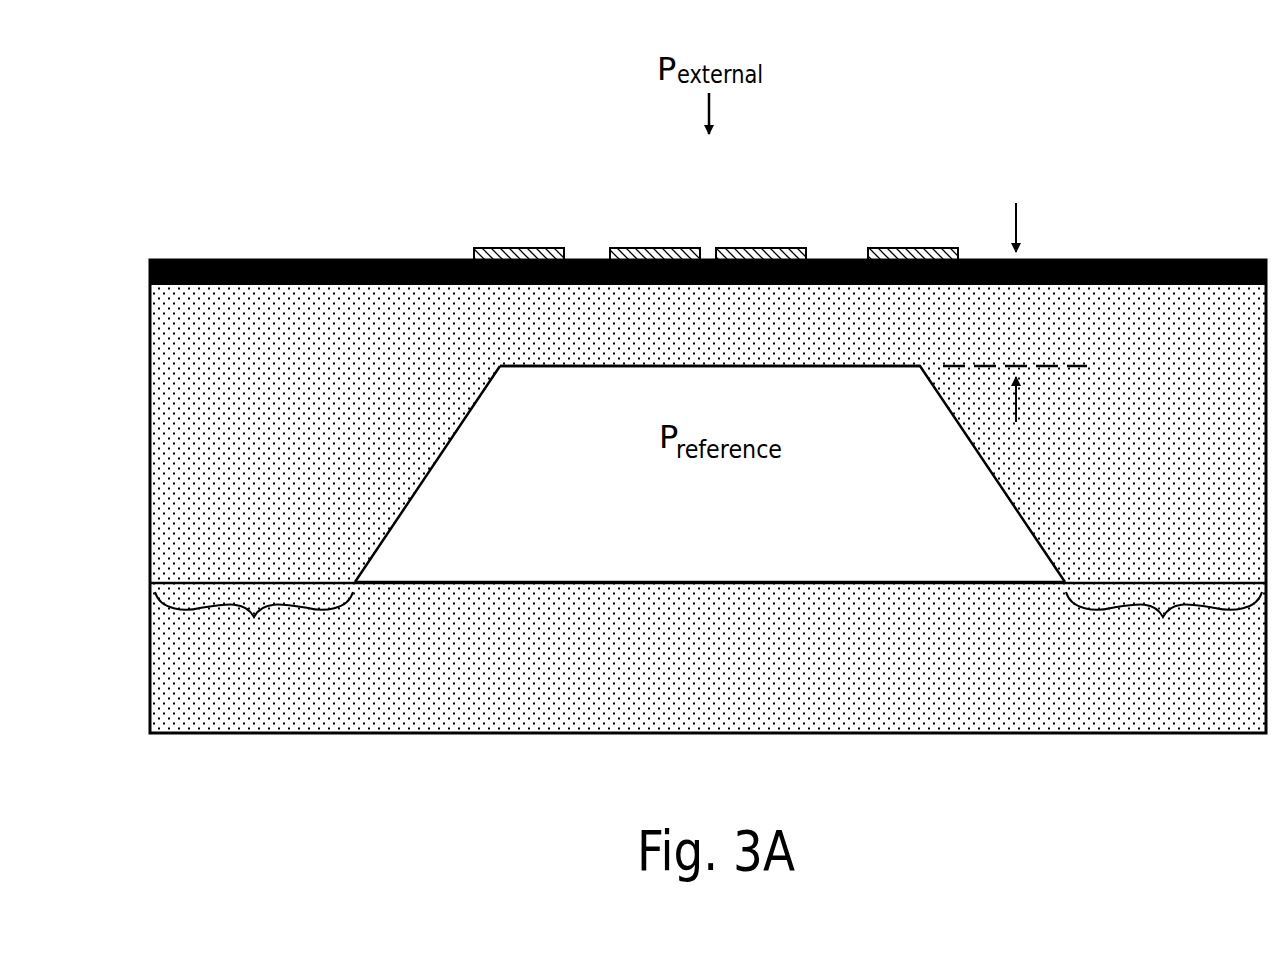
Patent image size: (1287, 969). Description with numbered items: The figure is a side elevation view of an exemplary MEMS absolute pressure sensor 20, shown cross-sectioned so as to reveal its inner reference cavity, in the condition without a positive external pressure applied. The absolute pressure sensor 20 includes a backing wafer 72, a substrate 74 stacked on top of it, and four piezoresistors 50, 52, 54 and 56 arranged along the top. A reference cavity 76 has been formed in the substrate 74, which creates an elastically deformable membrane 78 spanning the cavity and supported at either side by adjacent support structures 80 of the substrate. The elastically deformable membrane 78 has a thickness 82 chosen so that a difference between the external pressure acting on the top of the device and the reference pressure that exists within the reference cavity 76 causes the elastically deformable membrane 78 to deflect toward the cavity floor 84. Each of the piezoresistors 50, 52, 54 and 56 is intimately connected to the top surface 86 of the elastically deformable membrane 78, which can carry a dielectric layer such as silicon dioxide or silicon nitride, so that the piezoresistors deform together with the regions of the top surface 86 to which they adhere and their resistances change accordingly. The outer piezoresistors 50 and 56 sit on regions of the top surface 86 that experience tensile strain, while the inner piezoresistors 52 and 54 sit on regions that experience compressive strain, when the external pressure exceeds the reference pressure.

The absolute pressure sensor 20 is at (1170, 136).
The piezoresistor 50 is at (510, 248).
The piezoresistor 52 is at (643, 248).
The piezoresistor 54 is at (757, 248).
The piezoresistor 56 is at (905, 248).
The backing wafer 72 is at (203, 691).
The substrate 74 is at (192, 473).
The reference cavity 76 is at (506, 514).
The elastically deformable membrane 78 is at (617, 337).
The support structure 80 is at (708, 626).
The thickness 82 is at (1015, 312).
The cavity floor 84 is at (915, 582).
The top surface 86 is at (255, 260).